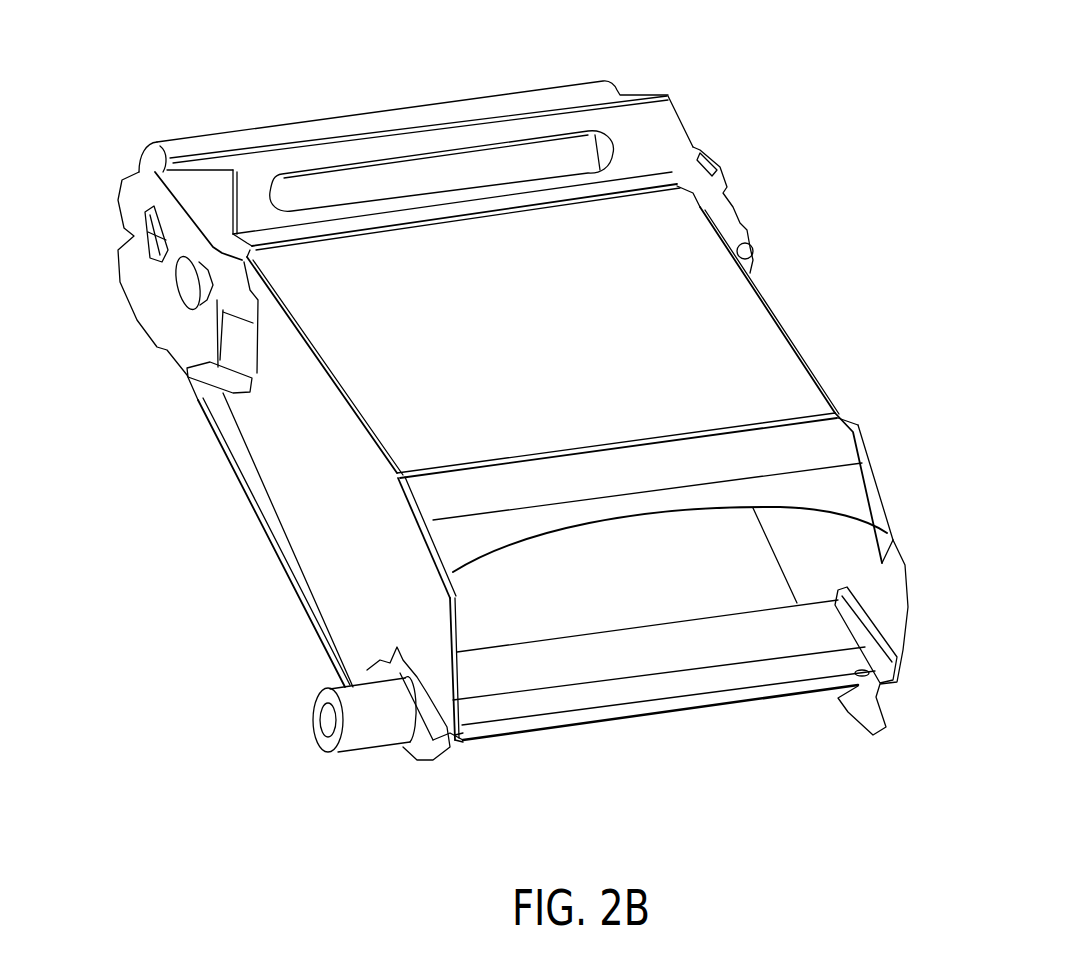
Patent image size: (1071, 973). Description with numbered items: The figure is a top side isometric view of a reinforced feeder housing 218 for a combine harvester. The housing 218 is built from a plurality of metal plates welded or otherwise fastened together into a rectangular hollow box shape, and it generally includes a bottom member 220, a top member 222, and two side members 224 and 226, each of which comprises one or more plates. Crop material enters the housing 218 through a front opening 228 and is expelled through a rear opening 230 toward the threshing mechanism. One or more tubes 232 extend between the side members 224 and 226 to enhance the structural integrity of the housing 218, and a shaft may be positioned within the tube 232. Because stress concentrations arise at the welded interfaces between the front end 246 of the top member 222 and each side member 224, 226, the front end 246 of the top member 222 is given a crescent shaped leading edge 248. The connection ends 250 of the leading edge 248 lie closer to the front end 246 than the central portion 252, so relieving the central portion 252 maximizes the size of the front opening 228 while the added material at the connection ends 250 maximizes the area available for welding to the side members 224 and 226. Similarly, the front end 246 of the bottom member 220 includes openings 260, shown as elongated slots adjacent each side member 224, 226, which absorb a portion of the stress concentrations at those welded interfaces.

The reinforced feeder housing 218 is at (95, 136).
The bottom member 220 is at (634, 606).
The top member 222 is at (757, 363).
The side member 224 is at (891, 602).
The side member 226 is at (357, 603).
The front opening 228 is at (762, 594).
The rear opening 230 is at (423, 178).
The tube 232 is at (370, 732).
The front end 246 is at (845, 477).
The crescent shaped leading edge 248 is at (591, 532).
The connection ends 250 is at (858, 493).
The central portion 252 is at (667, 514).
The openings 260 is at (467, 757).